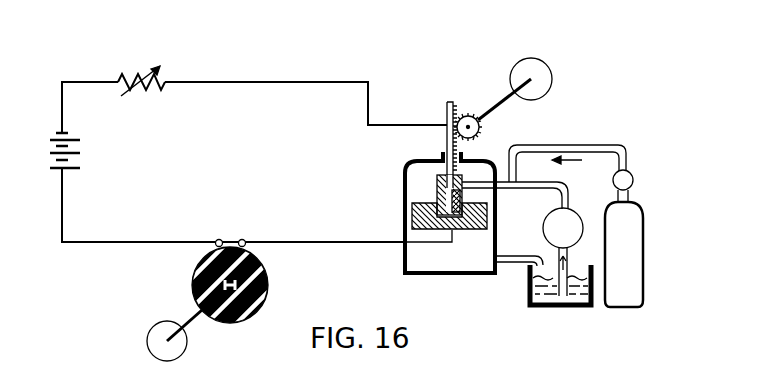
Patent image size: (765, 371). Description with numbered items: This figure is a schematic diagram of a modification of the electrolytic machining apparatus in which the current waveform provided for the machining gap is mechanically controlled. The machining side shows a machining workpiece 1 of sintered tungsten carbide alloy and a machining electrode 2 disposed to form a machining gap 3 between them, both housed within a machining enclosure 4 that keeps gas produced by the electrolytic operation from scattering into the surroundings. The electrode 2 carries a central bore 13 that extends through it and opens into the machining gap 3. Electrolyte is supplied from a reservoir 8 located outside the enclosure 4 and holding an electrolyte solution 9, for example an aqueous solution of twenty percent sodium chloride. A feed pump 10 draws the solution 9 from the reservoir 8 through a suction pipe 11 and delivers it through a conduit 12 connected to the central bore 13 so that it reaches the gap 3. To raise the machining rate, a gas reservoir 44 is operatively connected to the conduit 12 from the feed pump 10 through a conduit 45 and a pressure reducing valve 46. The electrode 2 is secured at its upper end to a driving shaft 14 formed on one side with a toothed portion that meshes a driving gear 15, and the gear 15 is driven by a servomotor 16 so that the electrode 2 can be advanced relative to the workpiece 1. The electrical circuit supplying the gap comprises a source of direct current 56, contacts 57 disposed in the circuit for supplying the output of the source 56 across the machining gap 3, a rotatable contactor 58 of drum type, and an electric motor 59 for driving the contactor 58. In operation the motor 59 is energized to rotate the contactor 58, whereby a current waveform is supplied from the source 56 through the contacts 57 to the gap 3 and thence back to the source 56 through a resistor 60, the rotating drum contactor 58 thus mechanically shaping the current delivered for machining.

The machining workpiece 1 is at (467, 231).
The machining electrode 2 is at (440, 179).
The machining gap 3 is at (435, 231).
The machining enclosure 4 is at (440, 275).
The reservoir 8 is at (546, 308).
The electrolyte solution 9 is at (579, 306).
The feed pump 10 is at (544, 225).
The suction pipe 11 is at (572, 262).
The conduit 12 is at (503, 189).
The central bore 13 is at (441, 193).
The driving shaft 14 is at (447, 115).
The driving gear 15 is at (481, 127).
The servomotor 16 is at (531, 60).
The gas reservoir 44 is at (624, 254).
The conduit 45 is at (630, 198).
The pressure reducing valve 46 is at (633, 177).
The source of direct current 56 is at (74, 150).
The contacts 57 is at (240, 239).
The rotatable contactor 58 is at (268, 279).
The electric motor 59 is at (178, 355).
The resistor 60 is at (141, 88).